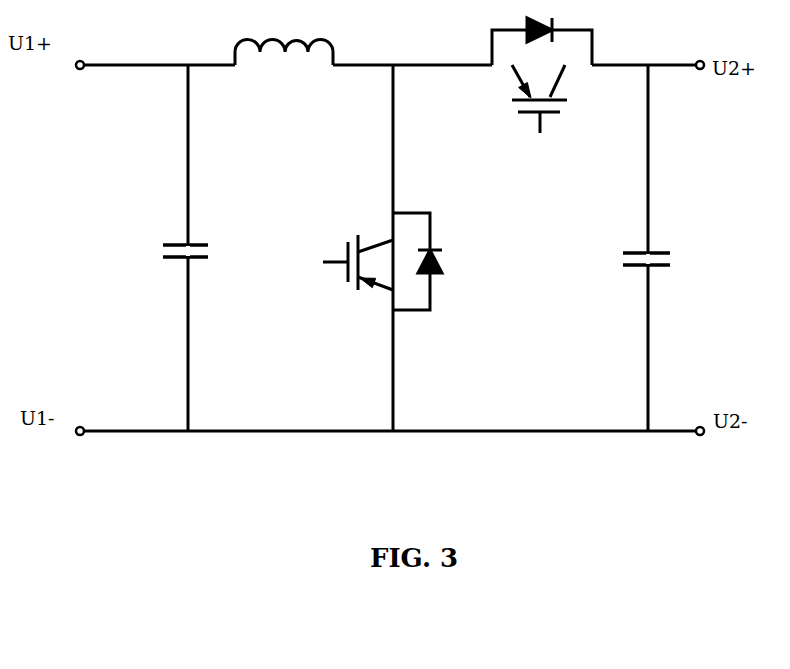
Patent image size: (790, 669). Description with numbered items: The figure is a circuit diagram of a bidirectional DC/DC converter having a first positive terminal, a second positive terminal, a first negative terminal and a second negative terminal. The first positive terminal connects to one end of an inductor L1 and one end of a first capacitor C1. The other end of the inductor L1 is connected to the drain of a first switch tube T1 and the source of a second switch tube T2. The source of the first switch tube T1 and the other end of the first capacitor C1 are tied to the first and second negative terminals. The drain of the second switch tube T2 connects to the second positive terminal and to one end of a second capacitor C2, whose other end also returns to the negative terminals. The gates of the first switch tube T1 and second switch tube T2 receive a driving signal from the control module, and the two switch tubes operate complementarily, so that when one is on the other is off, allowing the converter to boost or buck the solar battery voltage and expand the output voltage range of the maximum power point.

The inductor L1 is at (284, 32).
The first capacitor C1 is at (171, 232).
The second capacitor C2 is at (632, 236).
The first switch tube T1 is at (365, 256).
The second switch tube T2 is at (524, 75).